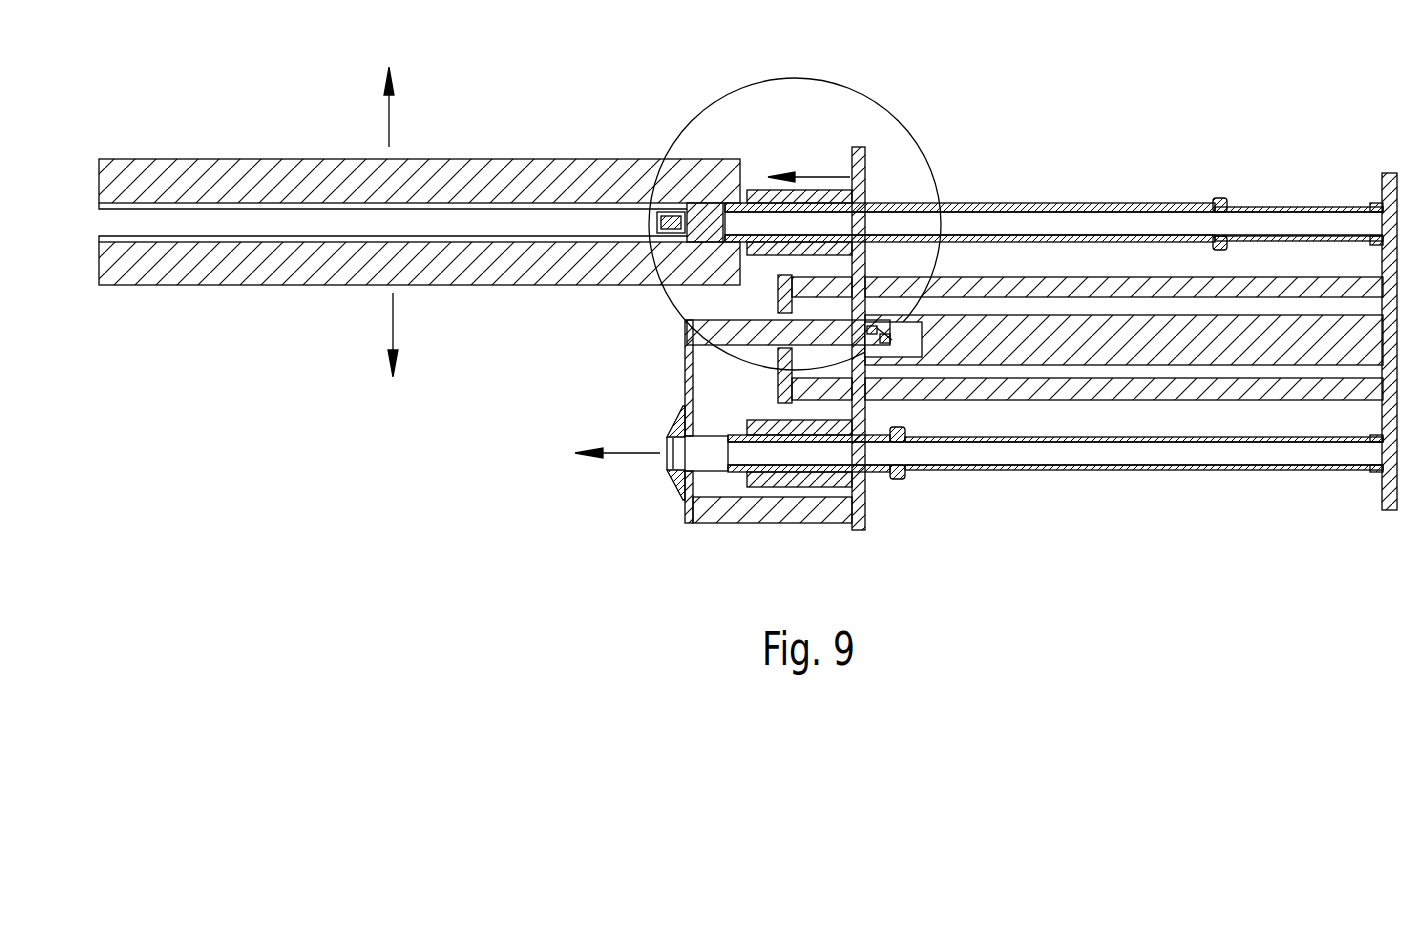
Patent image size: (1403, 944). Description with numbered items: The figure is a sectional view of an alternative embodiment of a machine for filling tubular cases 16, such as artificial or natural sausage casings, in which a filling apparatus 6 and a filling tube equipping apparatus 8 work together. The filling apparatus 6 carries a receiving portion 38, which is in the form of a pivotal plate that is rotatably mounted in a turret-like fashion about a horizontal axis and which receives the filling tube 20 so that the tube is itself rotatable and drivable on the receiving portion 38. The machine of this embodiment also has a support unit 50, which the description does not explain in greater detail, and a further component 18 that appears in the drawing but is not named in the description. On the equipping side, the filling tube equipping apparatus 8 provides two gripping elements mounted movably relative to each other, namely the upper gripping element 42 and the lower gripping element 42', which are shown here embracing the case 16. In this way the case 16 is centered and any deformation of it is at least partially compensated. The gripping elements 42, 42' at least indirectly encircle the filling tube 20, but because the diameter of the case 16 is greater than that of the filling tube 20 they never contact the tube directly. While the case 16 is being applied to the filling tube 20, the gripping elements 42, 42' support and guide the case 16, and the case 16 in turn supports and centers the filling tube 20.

The filling apparatus 6 is at (645, 513).
The filling tube equipping apparatus 8 is at (419, 238).
The tubular case 16 is at (1092, 205).
The stop ring 18 is at (1217, 199).
The filling tube 20 is at (1280, 207).
The receiving portion 38 is at (1389, 173).
The upper gripping element 42 is at (419, 129).
The lower gripping element 42' is at (419, 336).
The support unit 50 is at (966, 331).